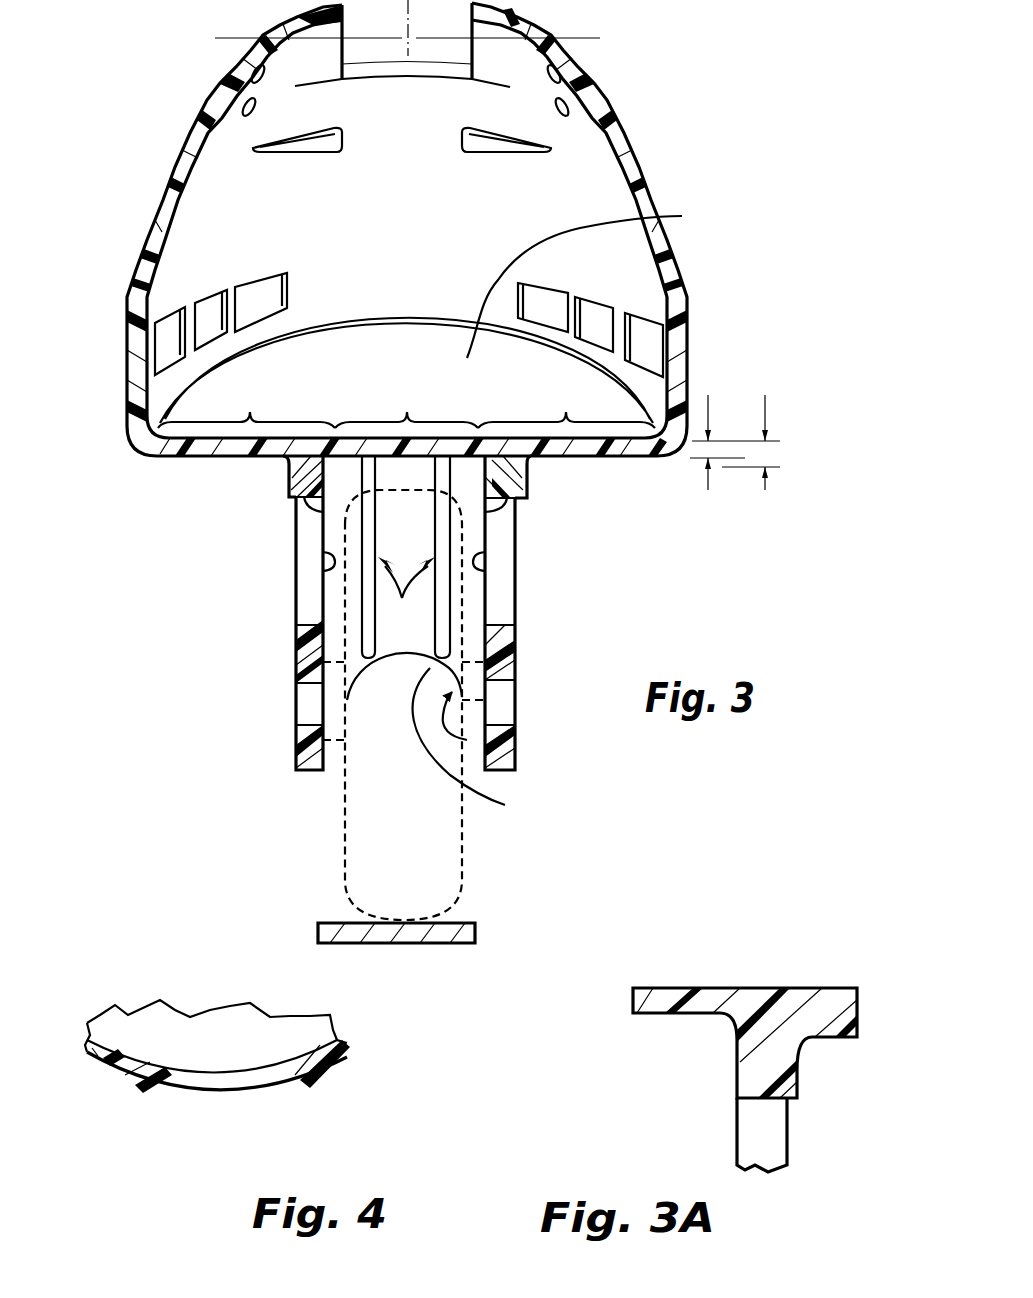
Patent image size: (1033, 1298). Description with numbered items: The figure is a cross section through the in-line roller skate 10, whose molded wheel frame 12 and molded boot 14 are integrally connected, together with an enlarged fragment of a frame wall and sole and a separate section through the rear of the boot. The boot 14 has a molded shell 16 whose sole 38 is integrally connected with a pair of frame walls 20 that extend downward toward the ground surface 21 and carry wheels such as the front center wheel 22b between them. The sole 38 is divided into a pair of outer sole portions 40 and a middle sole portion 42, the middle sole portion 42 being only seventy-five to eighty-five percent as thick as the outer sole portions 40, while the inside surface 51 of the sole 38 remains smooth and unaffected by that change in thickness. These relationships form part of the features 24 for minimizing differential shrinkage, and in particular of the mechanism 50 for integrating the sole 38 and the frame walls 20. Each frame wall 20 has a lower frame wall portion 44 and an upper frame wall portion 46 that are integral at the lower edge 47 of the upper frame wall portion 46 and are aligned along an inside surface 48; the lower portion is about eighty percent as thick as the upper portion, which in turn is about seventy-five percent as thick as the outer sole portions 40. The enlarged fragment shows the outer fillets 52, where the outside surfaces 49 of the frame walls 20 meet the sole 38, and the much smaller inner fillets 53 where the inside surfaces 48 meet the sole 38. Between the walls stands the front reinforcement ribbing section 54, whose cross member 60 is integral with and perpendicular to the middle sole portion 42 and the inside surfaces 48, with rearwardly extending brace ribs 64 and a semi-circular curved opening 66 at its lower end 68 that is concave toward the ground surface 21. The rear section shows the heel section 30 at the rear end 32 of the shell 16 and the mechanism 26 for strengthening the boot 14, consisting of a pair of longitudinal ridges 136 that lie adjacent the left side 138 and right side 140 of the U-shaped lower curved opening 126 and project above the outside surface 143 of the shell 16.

In FIG. 3, the in-line roller skate 10 is at (409, 471).
In FIG. 3, the wheel frame 12 is at (173, 753).
In FIG. 3, the boot 14 is at (608, 56).
In FIG. 3, the shell 16 is at (625, 130).
In FIG. 4, the shell 16 is at (147, 1000).
In FIG. 3, the frame walls 20 is at (290, 573).
In FIG. 3A, the frame walls 20 is at (795, 1110).
In FIG. 3, the ground surface 21 is at (460, 922).
In FIG. 3, the front center wheel 22b is at (405, 813).
In FIG. 3, the features for minimizing the effects of differential shrinkage 24 is at (335, 686).
In FIG. 4, the mechanism for strengthening the boot 26 is at (312, 1112).
In FIG. 4, the heel section 30 is at (224, 1055).
In FIG. 4, the rear end 32 is at (350, 1062).
In FIG. 3, the sole 38 is at (345, 363).
In FIG. 4, the sole 38 is at (303, 1030).
In FIG. 3A, the sole 38 is at (793, 968).
In FIG. 3, the outer sole portions 40 is at (406, 405).
In FIG. 3A, the outer sole portions 40 is at (848, 986).
In FIG. 3, the middle sole portion 42 is at (406, 405).
In FIG. 3A, the middle sole portion 42 is at (760, 986).
In FIG. 3, the lower frame wall portion 44 is at (293, 619).
In FIG. 3A, the lower frame wall portion 44 is at (735, 1148).
In FIG. 3, the upper frame wall portion 46 is at (290, 489).
In FIG. 3A, the upper frame wall portion 46 is at (735, 1071).
In FIG. 3, the lower edge 47 is at (300, 510).
In FIG. 3, the inside surface 48 is at (297, 558).
In FIG. 3A, the inside surface 48 is at (735, 1098).
In FIG. 3, the outside surfaces 49 is at (297, 531).
In FIG. 3A, the outside surfaces 49 is at (800, 1086).
In FIG. 3, the mechanism for integrating the sole and the frame walls 50 is at (172, 480).
In FIG. 3A, the mechanism for integrating the sole and the frame walls 50 is at (728, 1040).
In FIG. 3, the inside surface of the sole 51 is at (589, 281).
In FIG. 3, the outer fillets 52 is at (285, 466).
In FIG. 3A, the outer fillets 52 is at (805, 1045).
In FIG. 3, the inner fillets 53 is at (325, 456).
In FIG. 3A, the inner fillets 53 is at (722, 1026).
In FIG. 3, the front reinforcement ribbing section 54 is at (408, 680).
In FIG. 3, the cross member 60 is at (472, 512).
In FIG. 3, the rearwardly extending brace ribs 64 is at (406, 557).
In FIG. 3, the curved openings 66 is at (473, 746).
In FIG. 3, the lower end 68 is at (522, 741).
In FIG. 4, the lower curved opening 126 is at (222, 1082).
In FIG. 4, the longitudinal ridges 136 is at (142, 1085).
In FIG. 4, the left side 138 is at (185, 1077).
In FIG. 4, the right side 140 is at (273, 1075).
In FIG. 4, the outside surface 143 is at (110, 1080).